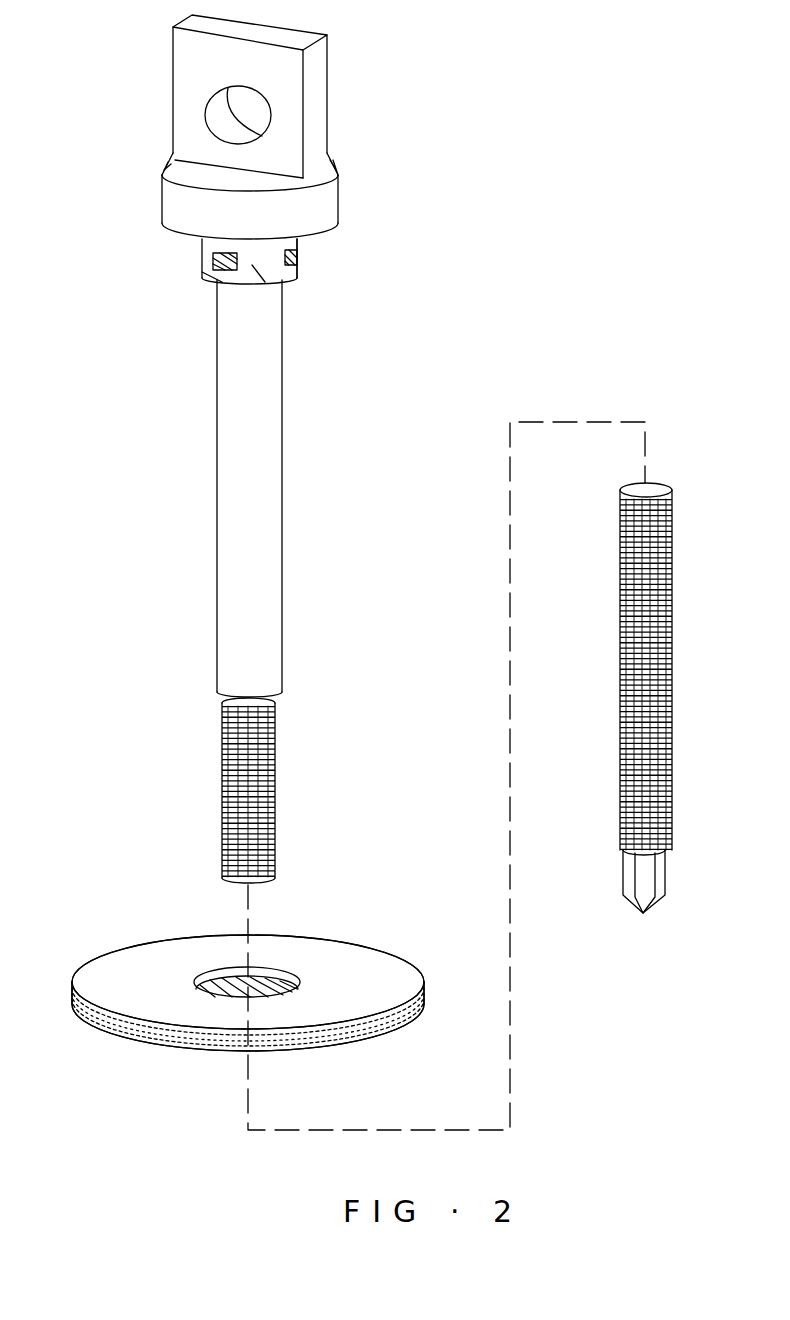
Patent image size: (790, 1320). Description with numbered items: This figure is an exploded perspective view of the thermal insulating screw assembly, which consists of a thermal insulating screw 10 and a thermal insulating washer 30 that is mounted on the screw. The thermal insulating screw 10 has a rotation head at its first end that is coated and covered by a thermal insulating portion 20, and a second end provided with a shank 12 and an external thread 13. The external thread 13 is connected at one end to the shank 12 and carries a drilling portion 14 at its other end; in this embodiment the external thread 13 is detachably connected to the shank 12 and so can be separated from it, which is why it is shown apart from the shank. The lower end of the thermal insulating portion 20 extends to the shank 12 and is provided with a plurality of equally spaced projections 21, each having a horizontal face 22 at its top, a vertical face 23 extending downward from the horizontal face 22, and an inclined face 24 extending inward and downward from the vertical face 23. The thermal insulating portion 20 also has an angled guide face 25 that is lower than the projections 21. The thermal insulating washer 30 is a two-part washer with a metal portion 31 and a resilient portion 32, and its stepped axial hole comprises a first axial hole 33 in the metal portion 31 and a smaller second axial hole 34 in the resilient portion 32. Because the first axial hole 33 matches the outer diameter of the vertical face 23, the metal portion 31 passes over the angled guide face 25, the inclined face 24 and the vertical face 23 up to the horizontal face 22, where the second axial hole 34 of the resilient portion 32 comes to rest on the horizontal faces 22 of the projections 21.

The thermal insulating screw 10 is at (190, 497).
The shank 12 is at (308, 833).
The external thread 13 is at (627, 658).
The drilling portion 14 is at (635, 878).
The thermal insulating portion 20 is at (187, 63).
The projections 21 is at (216, 258).
The horizontal face 22 is at (293, 248).
The vertical face 23 is at (295, 254).
The inclined face 24 is at (231, 265).
The angled guide face 25 is at (254, 267).
The thermal insulating washer 30 is at (148, 923).
The metal portion 31 is at (378, 960).
The resilient portion 32 is at (373, 1027).
The first axial hole 33 is at (277, 970).
The second axial hole 34 is at (230, 992).